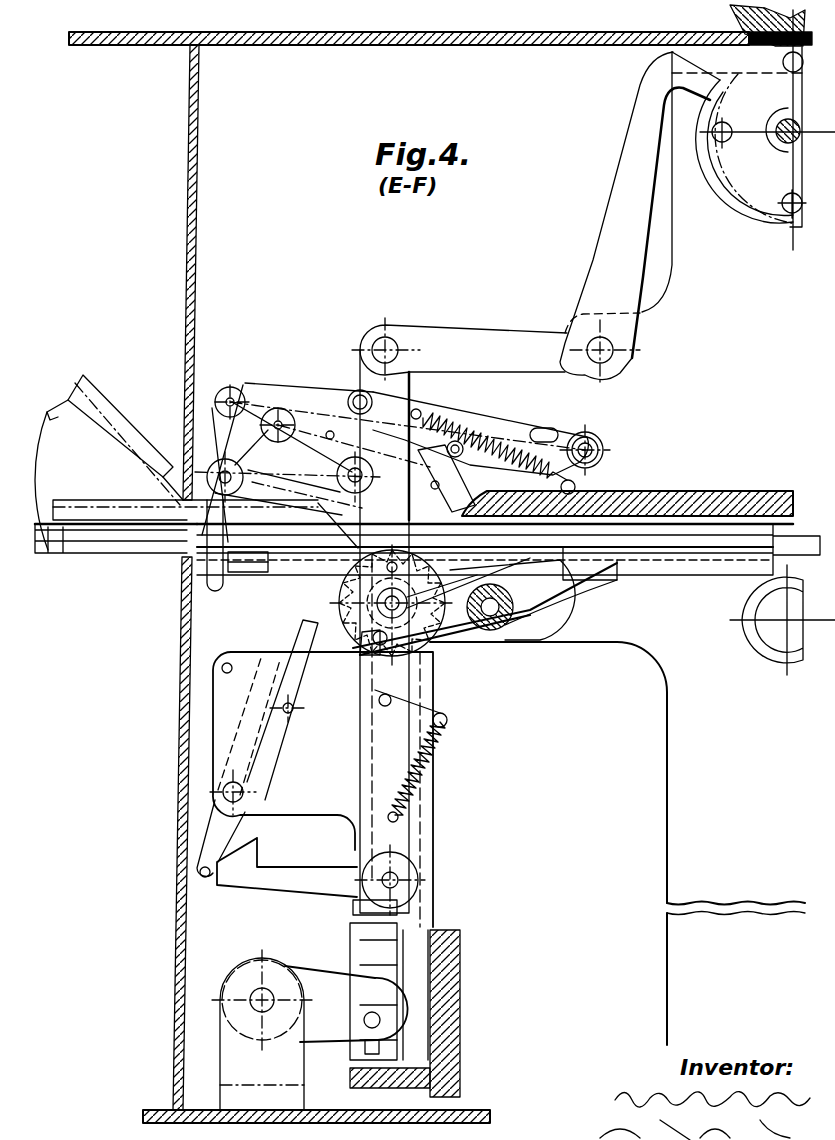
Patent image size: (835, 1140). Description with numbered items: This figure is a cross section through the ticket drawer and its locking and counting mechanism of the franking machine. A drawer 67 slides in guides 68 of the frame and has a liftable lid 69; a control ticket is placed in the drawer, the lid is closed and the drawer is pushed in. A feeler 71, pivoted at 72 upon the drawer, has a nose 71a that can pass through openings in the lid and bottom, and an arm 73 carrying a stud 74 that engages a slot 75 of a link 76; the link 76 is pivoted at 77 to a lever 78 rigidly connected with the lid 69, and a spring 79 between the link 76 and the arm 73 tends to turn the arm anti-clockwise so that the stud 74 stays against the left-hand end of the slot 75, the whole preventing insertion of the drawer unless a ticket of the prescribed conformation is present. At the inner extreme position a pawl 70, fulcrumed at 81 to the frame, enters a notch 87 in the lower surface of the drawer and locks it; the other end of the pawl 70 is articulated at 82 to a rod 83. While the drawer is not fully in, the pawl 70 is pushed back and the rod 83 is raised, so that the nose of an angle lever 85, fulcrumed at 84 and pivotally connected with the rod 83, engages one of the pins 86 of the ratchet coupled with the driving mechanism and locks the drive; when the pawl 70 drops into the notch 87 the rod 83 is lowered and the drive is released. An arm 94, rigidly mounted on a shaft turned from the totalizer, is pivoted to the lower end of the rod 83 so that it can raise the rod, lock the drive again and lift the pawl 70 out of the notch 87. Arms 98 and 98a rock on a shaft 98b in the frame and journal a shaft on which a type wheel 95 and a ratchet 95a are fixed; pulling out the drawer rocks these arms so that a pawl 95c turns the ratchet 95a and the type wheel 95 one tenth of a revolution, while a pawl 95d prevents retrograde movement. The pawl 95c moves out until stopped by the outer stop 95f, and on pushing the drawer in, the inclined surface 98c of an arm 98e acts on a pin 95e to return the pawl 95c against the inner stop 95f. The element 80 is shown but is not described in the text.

The drawer 67 is at (177, 530).
The guides 68 is at (730, 528).
The lid 69 is at (100, 434).
The pawl 70 is at (525, 582).
The feeler 71 is at (457, 503).
The nose 71a is at (300, 548).
The pivot 72 is at (536, 610).
The arm 73 is at (577, 487).
The stud 74 is at (598, 450).
The slot 75 is at (560, 440).
The link 76 is at (490, 432).
The pivot 77 is at (268, 404).
The lever 78 is at (338, 462).
The spring 79 is at (460, 432).
The lever 80 is at (215, 585).
The fulcrum 81 is at (494, 631).
The articulation 82 is at (372, 648).
The rod 83 is at (383, 772).
The fulcrum 84 is at (615, 350).
The angle lever 85 is at (622, 238).
The pins 86 is at (719, 142).
The notch 87 is at (617, 582).
The arm 94 is at (317, 1022).
The type wheel 95 is at (350, 604).
The ratchet 95a is at (482, 632).
The pawl 95c is at (305, 636).
The pawl 95d is at (443, 718).
The pin 95e is at (209, 880).
The stop 95f is at (283, 705).
The arm 98 is at (410, 838).
The arm 98a is at (433, 592).
The shaft 98b is at (420, 884).
The inclined surface 98c is at (248, 850).
The arm 98e is at (303, 870).